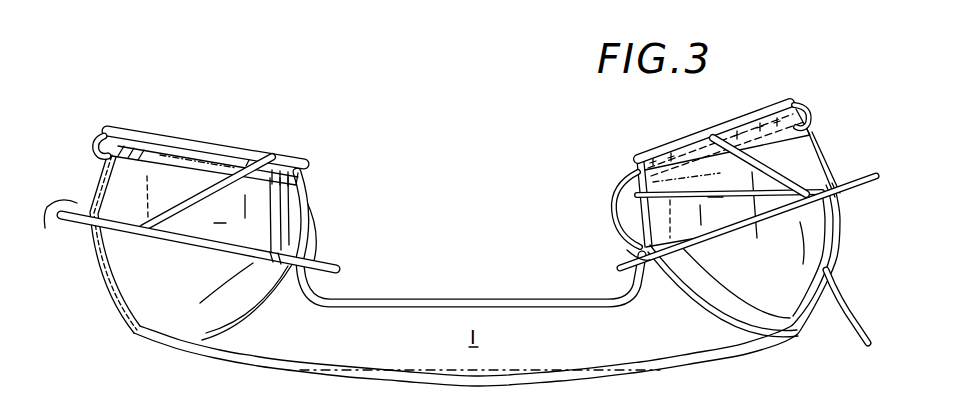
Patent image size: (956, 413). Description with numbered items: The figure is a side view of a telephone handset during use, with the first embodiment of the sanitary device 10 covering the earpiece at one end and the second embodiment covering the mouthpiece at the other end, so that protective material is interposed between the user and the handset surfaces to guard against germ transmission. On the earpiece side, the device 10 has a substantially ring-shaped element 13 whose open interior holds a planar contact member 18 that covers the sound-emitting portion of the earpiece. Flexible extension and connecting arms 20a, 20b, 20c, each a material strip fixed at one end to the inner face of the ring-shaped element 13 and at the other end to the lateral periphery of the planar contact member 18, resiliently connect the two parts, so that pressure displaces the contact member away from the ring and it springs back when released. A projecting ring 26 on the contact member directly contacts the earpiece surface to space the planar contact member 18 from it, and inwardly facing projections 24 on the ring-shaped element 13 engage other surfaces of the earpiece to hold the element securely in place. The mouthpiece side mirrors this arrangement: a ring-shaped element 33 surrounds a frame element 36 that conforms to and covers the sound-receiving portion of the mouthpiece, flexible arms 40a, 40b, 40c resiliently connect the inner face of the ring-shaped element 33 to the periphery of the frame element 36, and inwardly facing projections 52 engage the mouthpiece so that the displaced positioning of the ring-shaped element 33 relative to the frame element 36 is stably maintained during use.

The sanitary device 10 is at (84, 131).
The ring-shaped element 13 is at (87, 229).
The planar contact member 18 is at (145, 129).
The extension and connecting arm 20a is at (182, 248).
The extension and connecting arm 20b is at (95, 152).
The extension and connecting arm 20c is at (318, 247).
The inwardly facing projections 24 is at (264, 257).
The projecting ring 26 is at (284, 157).
The ring-shaped element 33 is at (767, 219).
The frame element 36 is at (777, 104).
The extension and connecting arm 40a is at (788, 172).
The extension and connecting arm 40b is at (810, 113).
The extension and connecting arm 40c is at (623, 177).
The inwardly facing projections 52 is at (617, 240).